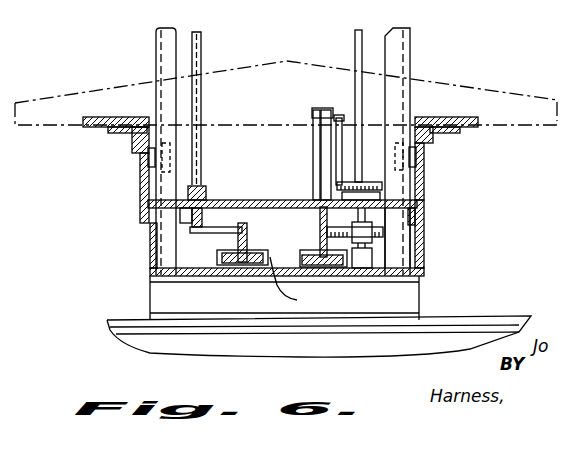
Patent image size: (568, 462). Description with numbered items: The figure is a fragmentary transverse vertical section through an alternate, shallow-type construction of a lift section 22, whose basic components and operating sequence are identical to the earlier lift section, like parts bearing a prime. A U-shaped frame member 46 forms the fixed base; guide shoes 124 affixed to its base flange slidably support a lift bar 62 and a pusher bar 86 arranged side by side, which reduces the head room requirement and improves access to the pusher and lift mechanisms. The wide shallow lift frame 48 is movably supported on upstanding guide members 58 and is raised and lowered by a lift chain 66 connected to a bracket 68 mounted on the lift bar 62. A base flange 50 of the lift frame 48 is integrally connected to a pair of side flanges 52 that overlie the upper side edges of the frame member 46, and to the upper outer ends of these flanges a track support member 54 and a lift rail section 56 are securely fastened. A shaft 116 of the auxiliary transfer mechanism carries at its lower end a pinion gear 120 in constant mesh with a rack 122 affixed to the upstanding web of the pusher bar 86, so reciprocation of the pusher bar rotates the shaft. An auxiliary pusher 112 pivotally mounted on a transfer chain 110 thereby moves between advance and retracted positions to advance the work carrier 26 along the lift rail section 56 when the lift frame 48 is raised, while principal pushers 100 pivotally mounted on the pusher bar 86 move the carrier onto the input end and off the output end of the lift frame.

The work carrier 26 is at (477, 93).
The guide members 58 is at (163, 42).
The lift rail section 56 is at (90, 125).
The track support member 54 is at (110, 130).
The side flanges 52 is at (138, 177).
The lift frame 48 is at (434, 180).
The lift section 22 is at (431, 228).
The U-shaped frame member 46 is at (418, 256).
The base flange 50 is at (242, 200).
The lift chain 66 is at (202, 42).
The bracket 68 is at (228, 229).
The lift bar 62 is at (233, 242).
The pusher bar 86 is at (318, 230).
The rack 122 is at (323, 225).
The principal pushers 100 is at (318, 143).
The auxiliary pusher 112 is at (341, 113).
The shaft 116 is at (354, 38).
The transfer chain 110 is at (339, 182).
The pinion gear 120 is at (378, 237).
The guide shoes 124 is at (302, 283).